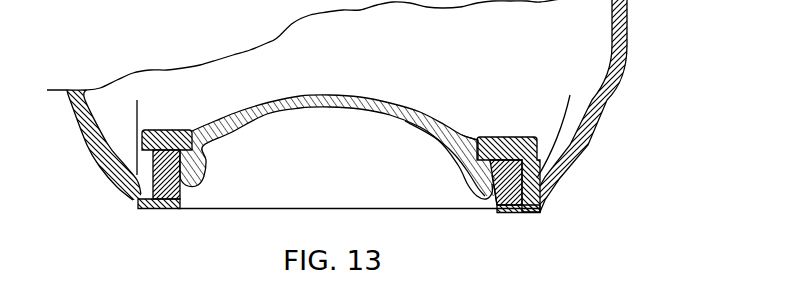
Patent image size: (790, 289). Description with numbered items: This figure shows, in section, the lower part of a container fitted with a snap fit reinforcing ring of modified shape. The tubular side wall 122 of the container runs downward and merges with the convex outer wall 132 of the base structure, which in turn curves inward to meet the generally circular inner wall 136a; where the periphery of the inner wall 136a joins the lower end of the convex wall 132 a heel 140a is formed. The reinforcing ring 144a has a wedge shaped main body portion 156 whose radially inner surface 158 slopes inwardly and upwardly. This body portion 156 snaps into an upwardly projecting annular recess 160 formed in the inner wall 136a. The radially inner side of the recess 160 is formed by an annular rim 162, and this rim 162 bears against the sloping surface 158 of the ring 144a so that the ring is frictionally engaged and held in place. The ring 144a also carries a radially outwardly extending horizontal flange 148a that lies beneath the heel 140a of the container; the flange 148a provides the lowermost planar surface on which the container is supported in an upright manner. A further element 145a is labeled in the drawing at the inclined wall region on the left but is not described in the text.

The tubular side wall 122 is at (640, 0).
The convex outer wall 132 is at (573, 170).
The inner wall 136a is at (405, 104).
The heel portion 140a is at (136, 100).
The reinforcing ring 144a is at (176, 212).
The inclined wall 145a is at (125, 159).
The horizontal flange 148a is at (542, 216).
The main body portion 156 is at (181, 130).
The radially inner surface 158 is at (497, 202).
The annular recess 160 is at (479, 137).
The annular rim 162 is at (475, 198).